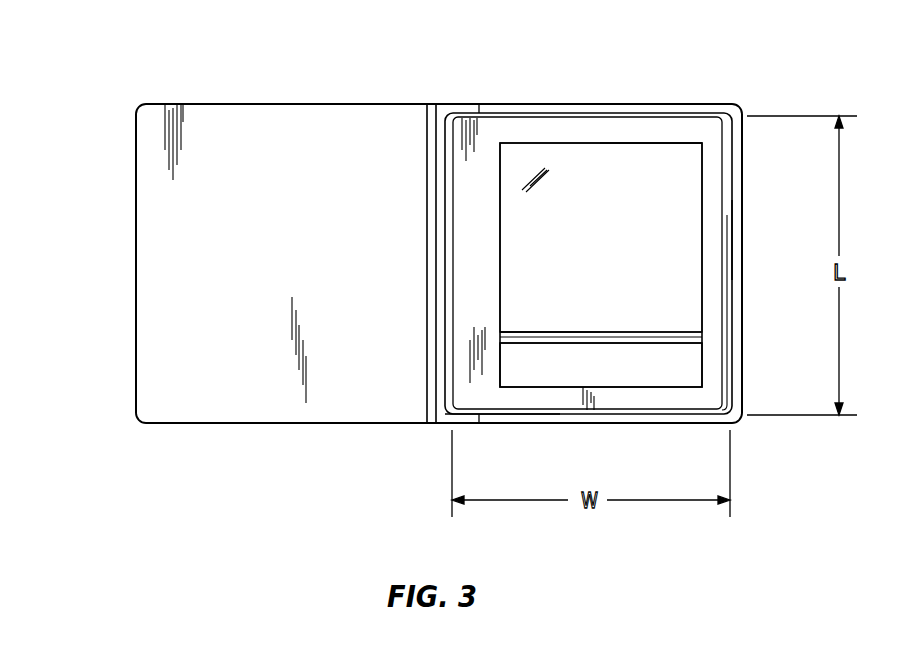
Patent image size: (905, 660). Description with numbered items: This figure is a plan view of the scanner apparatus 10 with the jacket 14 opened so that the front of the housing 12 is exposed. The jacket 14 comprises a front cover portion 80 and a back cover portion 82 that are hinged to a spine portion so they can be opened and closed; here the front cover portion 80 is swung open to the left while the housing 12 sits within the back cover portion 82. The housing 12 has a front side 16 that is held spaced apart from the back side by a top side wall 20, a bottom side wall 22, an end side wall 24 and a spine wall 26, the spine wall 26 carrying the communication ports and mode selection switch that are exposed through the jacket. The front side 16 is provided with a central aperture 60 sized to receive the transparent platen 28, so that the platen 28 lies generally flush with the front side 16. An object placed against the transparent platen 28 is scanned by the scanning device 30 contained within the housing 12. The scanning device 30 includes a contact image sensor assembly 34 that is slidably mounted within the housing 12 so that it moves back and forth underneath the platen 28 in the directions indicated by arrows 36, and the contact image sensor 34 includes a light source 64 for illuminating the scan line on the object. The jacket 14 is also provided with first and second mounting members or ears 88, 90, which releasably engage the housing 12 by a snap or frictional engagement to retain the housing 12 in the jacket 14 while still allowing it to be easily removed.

The scanner apparatus 10 is at (212, 57).
The housing 12 is at (756, 158).
The jacket 14 is at (128, 219).
The front side 16 is at (577, 152).
The top side wall 20 is at (657, 113).
The bottom side wall 22 is at (612, 424).
The end side wall 24 is at (733, 237).
The spine wall 26 is at (457, 373).
The transparent platen 28 is at (599, 231).
The scanning device 30 is at (681, 322).
The contact image sensor assembly 34 is at (542, 332).
The arrows 36 is at (601, 268).
The central aperture 60 is at (668, 144).
The light source 64 is at (577, 345).
The front cover portion 80 is at (136, 326).
The back cover portion 82 is at (743, 378).
The first mounting member 88 is at (462, 104).
The second mounting member 90 is at (465, 424).